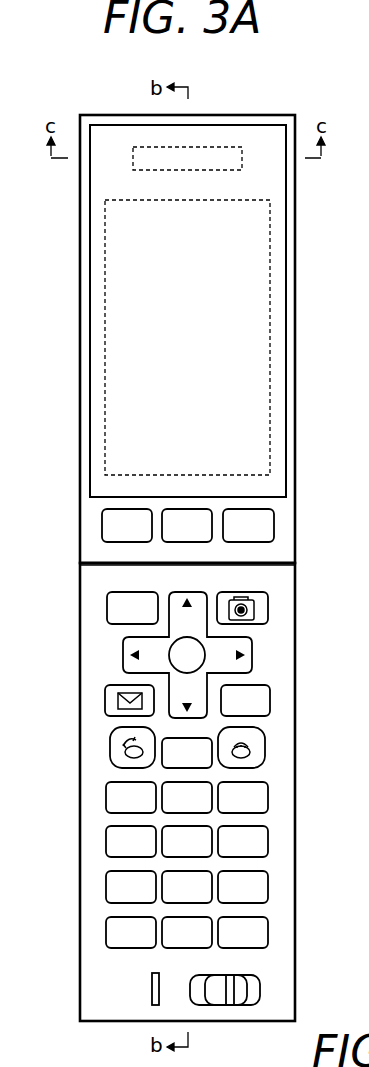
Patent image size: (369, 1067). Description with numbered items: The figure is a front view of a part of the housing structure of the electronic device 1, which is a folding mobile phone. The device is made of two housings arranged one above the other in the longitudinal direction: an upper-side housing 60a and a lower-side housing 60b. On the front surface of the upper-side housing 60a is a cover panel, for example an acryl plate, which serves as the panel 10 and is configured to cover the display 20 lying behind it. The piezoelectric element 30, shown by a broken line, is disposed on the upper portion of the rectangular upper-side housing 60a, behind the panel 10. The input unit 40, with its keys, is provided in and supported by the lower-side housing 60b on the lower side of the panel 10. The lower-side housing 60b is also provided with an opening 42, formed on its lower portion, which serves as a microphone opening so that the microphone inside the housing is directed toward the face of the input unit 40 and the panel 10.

The electronic device 1 is at (147, 108).
The panel 10 is at (207, 125).
The display 20 is at (228, 293).
The piezoelectric element 30 is at (232, 147).
The input unit 40 is at (255, 526).
The opening 42 is at (150, 990).
The upper-side housing 60a is at (80, 255).
The lower-side housing 60b is at (80, 700).